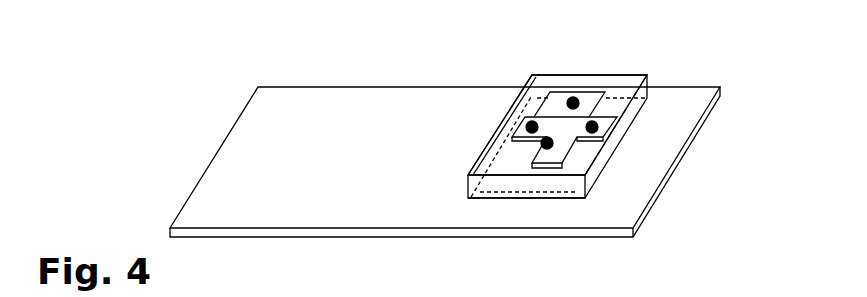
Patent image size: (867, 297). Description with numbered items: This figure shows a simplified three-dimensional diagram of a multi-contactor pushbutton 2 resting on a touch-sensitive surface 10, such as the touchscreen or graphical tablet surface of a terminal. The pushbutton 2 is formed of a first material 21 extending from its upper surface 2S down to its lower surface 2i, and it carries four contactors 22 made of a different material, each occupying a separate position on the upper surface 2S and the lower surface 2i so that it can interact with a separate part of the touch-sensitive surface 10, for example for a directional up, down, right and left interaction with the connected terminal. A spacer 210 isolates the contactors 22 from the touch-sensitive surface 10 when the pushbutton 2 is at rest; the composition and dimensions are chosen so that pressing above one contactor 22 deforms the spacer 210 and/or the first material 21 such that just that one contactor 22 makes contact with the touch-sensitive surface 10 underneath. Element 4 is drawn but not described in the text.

The pushbutton 2 is at (465, 153).
The first material 21 is at (487, 164).
The spacer 210 is at (486, 198).
The contactor 22 is at (548, 137).
The upper surface 2S is at (603, 118).
The lower surface 2i is at (605, 124).
The touch-sensitive surface 10 is at (652, 204).
The connection element 4 is at (598, 296).